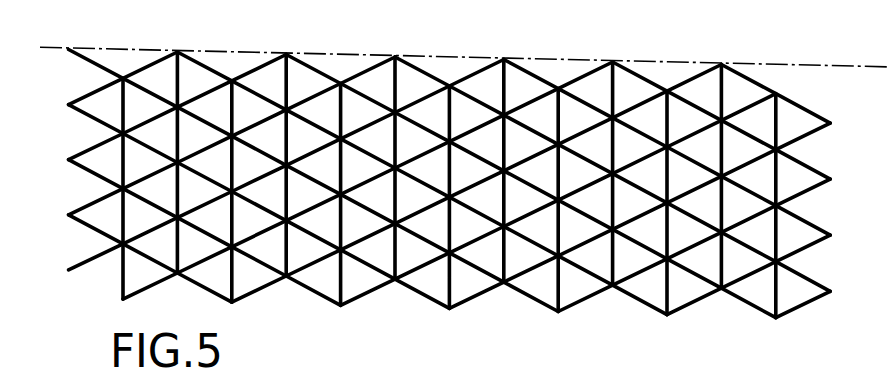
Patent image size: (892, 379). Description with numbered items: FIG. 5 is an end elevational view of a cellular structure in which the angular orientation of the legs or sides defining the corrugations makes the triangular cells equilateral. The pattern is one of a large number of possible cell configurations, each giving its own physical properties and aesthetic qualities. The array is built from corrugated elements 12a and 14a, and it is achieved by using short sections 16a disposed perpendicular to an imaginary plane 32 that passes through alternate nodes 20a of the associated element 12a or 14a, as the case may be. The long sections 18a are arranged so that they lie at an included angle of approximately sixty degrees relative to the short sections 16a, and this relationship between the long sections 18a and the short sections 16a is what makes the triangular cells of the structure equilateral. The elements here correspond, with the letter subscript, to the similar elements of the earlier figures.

The element 12a is at (203, 53).
The element 14a is at (242, 104).
The short section 16a is at (506, 85).
The long section 18a is at (557, 87).
The node 20a is at (397, 53).
The imaginary plane 32 is at (278, 51).